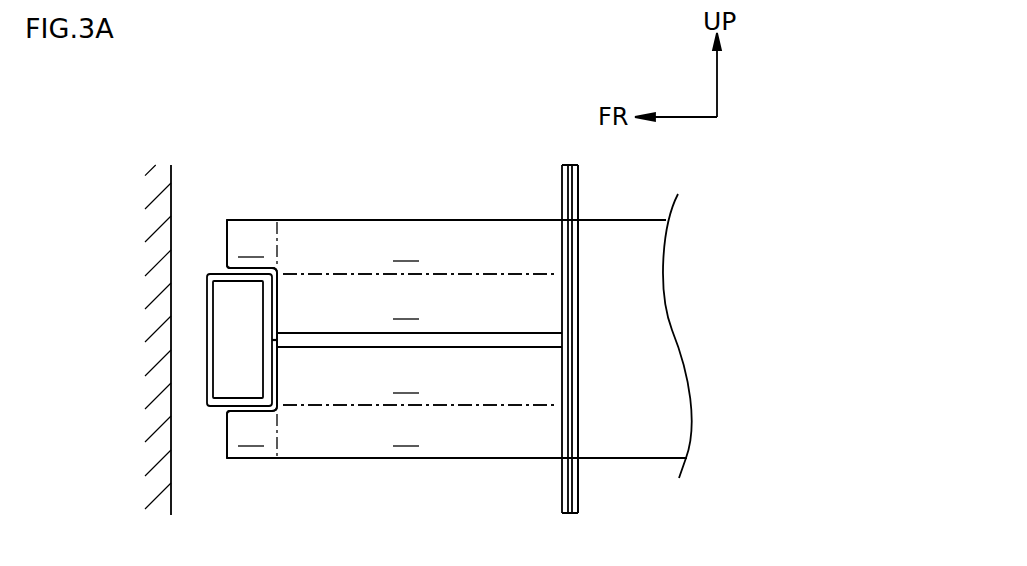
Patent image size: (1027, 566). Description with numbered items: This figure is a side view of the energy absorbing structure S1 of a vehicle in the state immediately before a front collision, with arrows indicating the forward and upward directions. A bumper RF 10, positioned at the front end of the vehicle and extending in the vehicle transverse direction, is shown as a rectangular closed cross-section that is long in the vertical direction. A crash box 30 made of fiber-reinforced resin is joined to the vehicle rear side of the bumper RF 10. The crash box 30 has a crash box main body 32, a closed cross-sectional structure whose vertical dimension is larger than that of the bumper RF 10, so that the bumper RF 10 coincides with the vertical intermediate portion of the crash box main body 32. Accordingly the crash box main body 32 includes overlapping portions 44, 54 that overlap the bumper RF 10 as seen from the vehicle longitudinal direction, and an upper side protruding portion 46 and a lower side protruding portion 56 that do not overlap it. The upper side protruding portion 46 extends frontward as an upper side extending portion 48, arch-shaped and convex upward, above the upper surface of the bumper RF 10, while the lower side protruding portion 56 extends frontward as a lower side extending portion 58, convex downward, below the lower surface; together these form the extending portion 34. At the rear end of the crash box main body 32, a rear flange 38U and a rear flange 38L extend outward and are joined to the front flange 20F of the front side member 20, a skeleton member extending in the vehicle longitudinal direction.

The bumper RF 10 is at (209, 271).
The front side member 20 is at (654, 217).
The front flange 20F is at (578, 183).
The crash box 30 is at (459, 186).
The crash box main body 32 is at (407, 218).
The extending portion 34 is at (254, 217).
The rear flange 38U is at (562, 169).
The rear flange 38L is at (564, 494).
The overlapping portion 44 is at (419, 303).
The upper side protruding portion 46 is at (422, 247).
The upper side extending portion 48 is at (257, 243).
The overlapping portion 54 is at (419, 376).
The lower side protruding portion 56 is at (422, 431).
The lower side extending portion 58 is at (257, 435).
The energy absorbing structure of a vehicle S1 is at (292, 127).